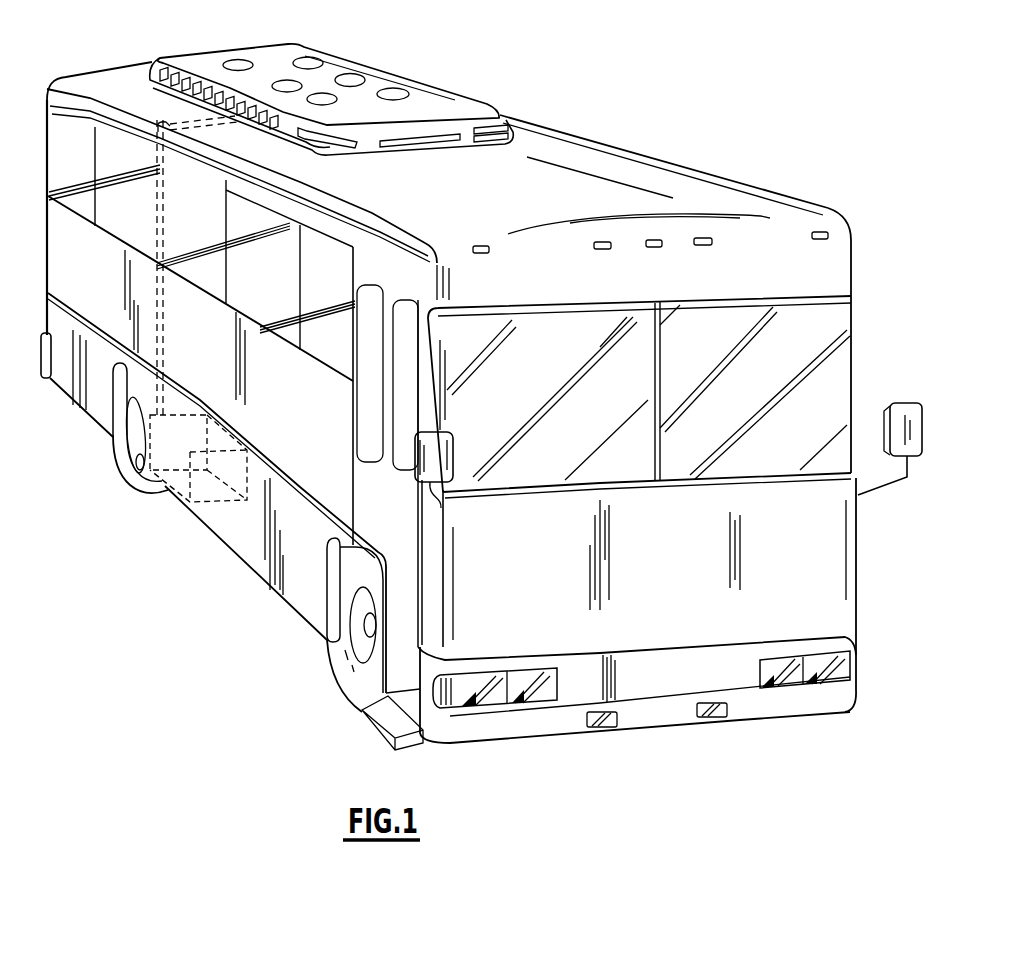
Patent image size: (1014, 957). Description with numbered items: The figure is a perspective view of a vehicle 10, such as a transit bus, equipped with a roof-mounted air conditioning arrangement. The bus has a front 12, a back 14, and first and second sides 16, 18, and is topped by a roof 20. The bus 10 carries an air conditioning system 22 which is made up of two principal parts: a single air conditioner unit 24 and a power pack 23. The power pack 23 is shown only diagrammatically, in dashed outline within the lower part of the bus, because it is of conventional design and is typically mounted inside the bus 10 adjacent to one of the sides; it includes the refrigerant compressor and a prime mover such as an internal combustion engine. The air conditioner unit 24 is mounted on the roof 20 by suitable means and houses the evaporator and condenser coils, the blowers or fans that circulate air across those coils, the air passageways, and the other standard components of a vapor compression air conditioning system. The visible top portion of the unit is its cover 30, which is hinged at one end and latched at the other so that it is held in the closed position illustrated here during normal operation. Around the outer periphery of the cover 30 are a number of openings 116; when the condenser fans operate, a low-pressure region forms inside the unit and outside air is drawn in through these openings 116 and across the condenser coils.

The vehicle 10 is at (250, 695).
The front 12 is at (674, 686).
The back 14 is at (93, 68).
The first side 16 is at (760, 185).
The second side 18 is at (97, 410).
The roof 20 is at (603, 162).
The air conditioning system 22 is at (391, 52).
The power pack 23 is at (173, 497).
The air conditioner unit 24 is at (498, 103).
The cover 30 is at (222, 58).
The openings 116 is at (183, 70).